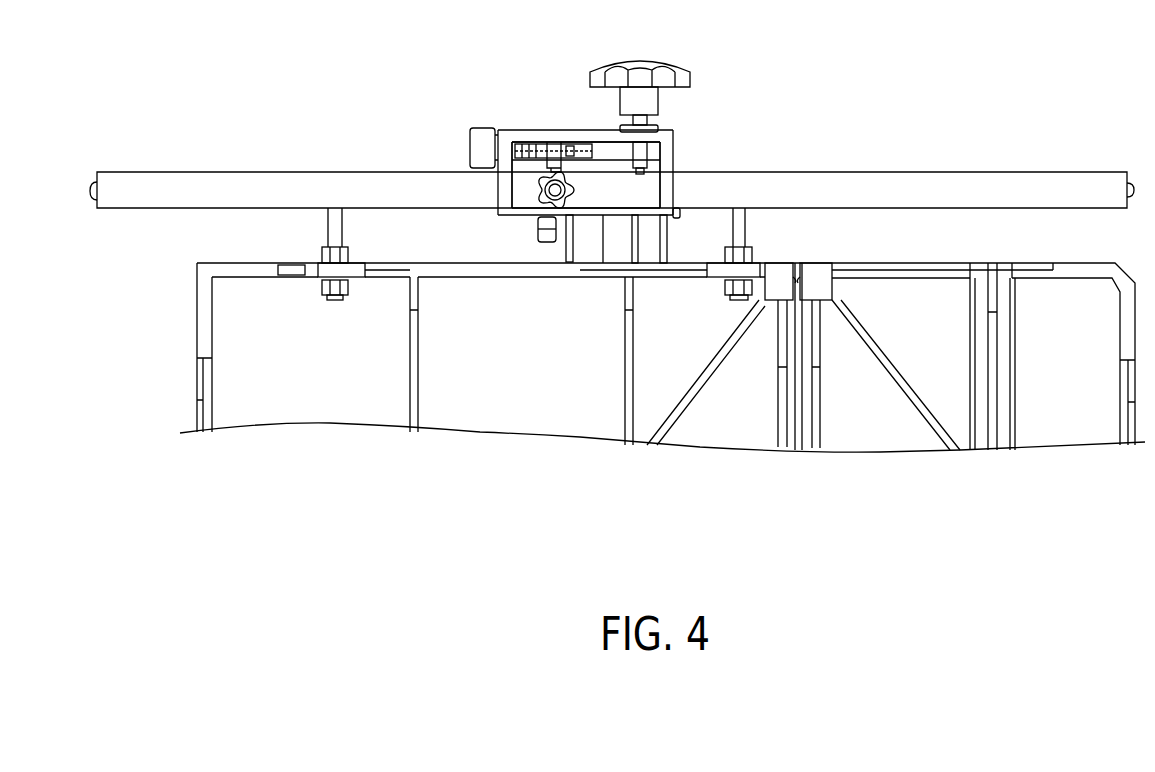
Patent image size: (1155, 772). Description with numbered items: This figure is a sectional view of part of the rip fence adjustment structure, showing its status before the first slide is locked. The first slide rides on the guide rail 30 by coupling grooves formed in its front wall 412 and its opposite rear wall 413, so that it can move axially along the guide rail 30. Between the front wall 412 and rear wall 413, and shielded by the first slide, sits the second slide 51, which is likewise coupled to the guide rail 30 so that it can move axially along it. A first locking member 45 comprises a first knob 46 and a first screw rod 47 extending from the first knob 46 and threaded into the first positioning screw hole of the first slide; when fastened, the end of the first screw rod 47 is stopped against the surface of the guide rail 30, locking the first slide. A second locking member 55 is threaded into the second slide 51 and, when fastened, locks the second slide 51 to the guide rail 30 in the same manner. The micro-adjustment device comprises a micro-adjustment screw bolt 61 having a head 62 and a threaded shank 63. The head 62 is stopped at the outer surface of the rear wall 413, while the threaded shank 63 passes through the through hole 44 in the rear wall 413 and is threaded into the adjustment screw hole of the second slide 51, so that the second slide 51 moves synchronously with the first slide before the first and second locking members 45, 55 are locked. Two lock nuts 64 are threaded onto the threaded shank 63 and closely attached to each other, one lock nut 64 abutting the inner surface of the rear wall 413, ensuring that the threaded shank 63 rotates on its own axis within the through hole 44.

The guide rail 30 is at (1027, 183).
The front wall 412 is at (667, 185).
The rear wall 413 is at (502, 188).
The through hole 44 is at (509, 143).
The first locking member 45 is at (699, 102).
The first knob 46 is at (667, 78).
The first screw rod 47 is at (643, 147).
The second slide 51 is at (557, 155).
The second locking member 55 is at (531, 207).
The micro-adjustment screw bolt 61 is at (500, 93).
The head 62 is at (483, 133).
The threaded shank 63 is at (540, 150).
The lock nuts 64 is at (530, 150).